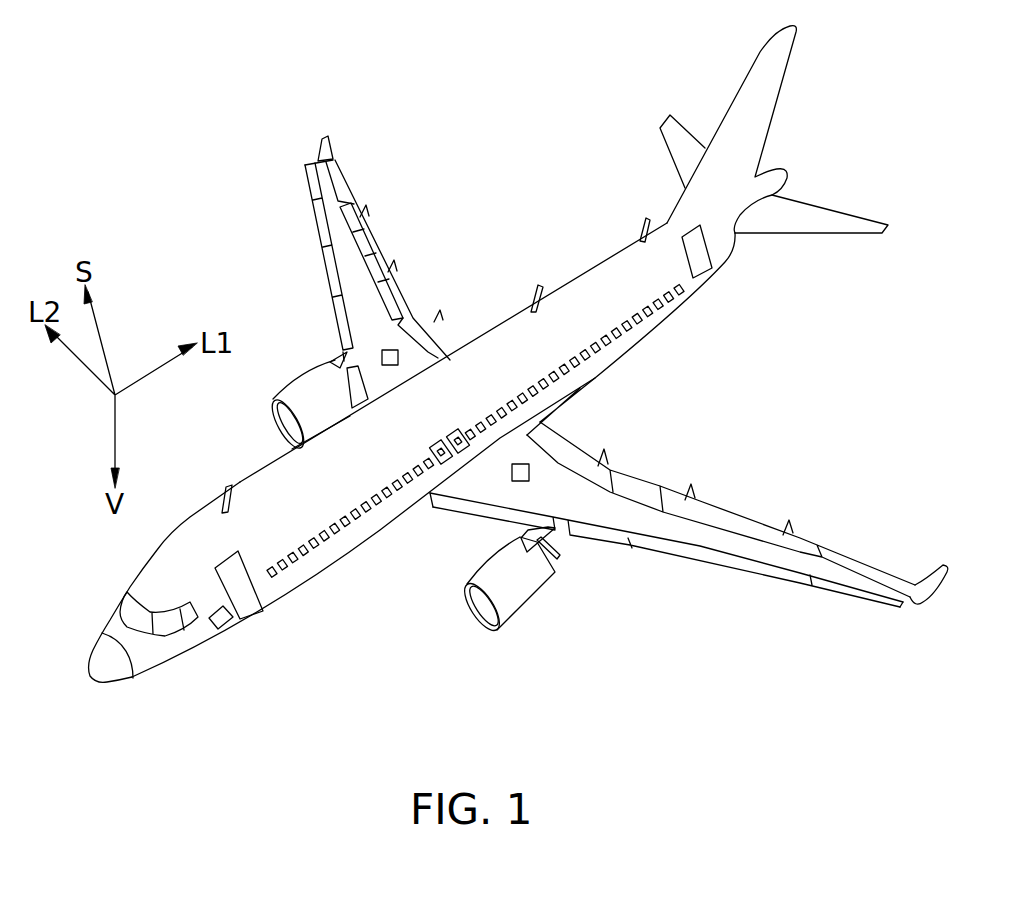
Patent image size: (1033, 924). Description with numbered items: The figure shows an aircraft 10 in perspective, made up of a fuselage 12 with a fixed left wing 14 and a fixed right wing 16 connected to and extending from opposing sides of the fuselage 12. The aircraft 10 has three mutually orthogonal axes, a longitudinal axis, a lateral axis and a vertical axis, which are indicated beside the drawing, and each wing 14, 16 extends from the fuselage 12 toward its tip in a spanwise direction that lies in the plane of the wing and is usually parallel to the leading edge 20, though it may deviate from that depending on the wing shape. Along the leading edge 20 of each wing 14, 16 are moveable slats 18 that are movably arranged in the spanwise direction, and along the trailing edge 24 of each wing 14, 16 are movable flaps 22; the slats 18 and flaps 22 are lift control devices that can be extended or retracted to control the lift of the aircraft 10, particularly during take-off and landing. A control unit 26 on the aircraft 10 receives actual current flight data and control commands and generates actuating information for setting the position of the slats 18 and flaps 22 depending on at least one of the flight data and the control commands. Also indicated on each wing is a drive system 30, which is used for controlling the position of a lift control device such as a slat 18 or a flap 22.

The aircraft 10 is at (312, 78).
The fuselage 12 is at (584, 283).
The fixed left wing 14 is at (724, 420).
The fixed right wing 16 is at (419, 186).
The moveable slats 18 is at (342, 322).
The leading edge 20 is at (290, 168).
The movable flaps 22 is at (378, 268).
The trailing edge 24 is at (362, 150).
The control unit 26 is at (224, 621).
The drive system 30 is at (395, 350).